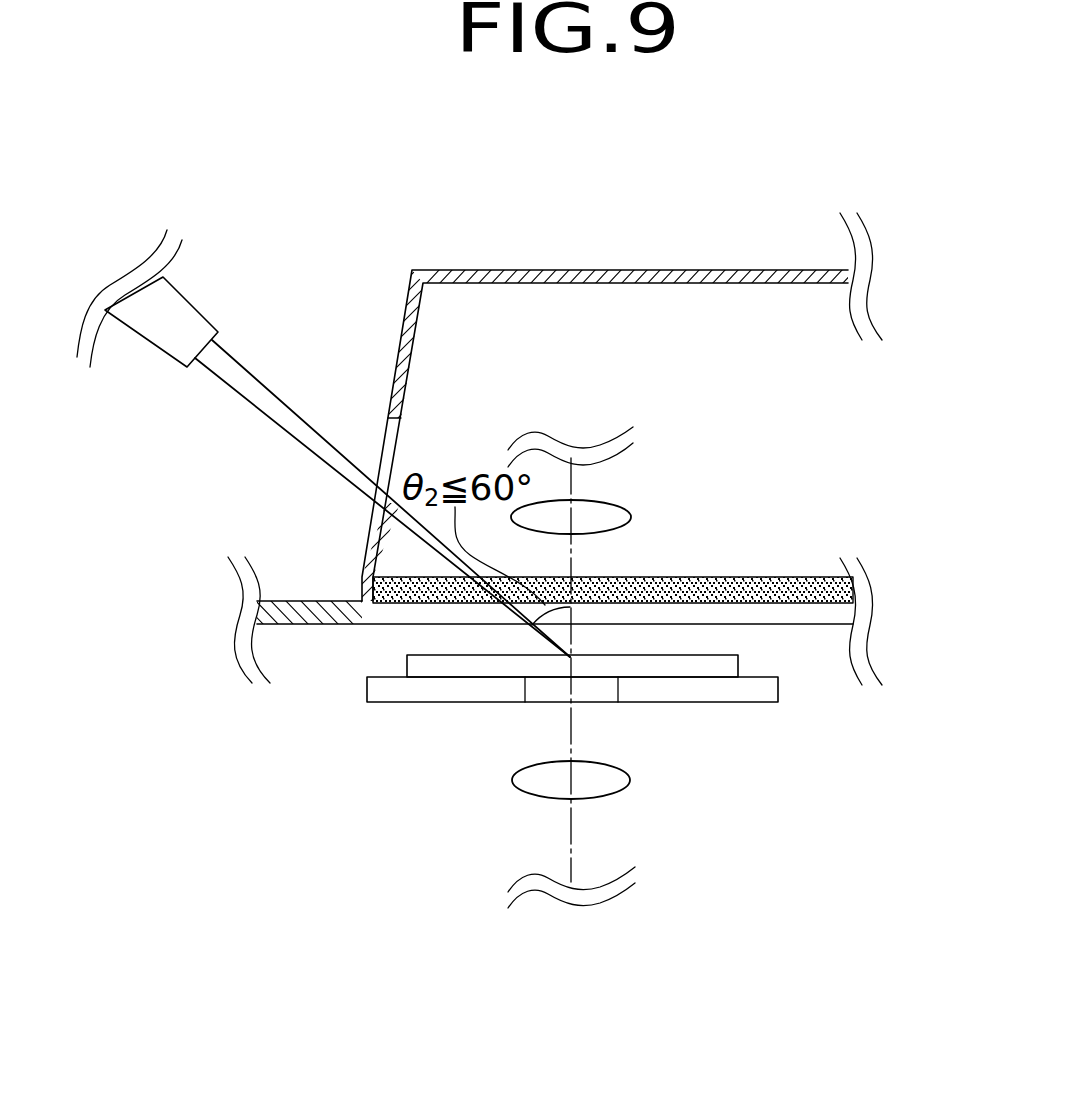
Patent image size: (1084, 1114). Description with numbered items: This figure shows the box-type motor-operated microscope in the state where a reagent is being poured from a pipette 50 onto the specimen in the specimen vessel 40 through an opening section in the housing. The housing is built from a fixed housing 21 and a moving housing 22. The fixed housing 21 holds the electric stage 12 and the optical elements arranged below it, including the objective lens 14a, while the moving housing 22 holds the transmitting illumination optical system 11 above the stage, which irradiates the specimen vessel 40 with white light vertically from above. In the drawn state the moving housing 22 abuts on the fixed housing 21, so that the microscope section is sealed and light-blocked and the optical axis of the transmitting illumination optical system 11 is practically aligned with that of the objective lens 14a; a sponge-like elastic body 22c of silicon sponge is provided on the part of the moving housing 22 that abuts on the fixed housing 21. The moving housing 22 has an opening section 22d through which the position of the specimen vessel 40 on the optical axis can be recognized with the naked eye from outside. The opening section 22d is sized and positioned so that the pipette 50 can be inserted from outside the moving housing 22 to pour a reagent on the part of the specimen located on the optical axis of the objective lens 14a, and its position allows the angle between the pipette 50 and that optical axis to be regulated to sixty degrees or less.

The moving housing 22 is at (668, 270).
The opening section 22d is at (395, 427).
The sponge-like elastic body 22c is at (670, 578).
The fixed housing 21 is at (315, 624).
The transmitting illumination optical system 11 is at (647, 390).
The pipette 50 is at (167, 303).
The specimen vessel 40 is at (732, 670).
The electric stage 12 is at (725, 697).
The objective lens 14a is at (607, 788).